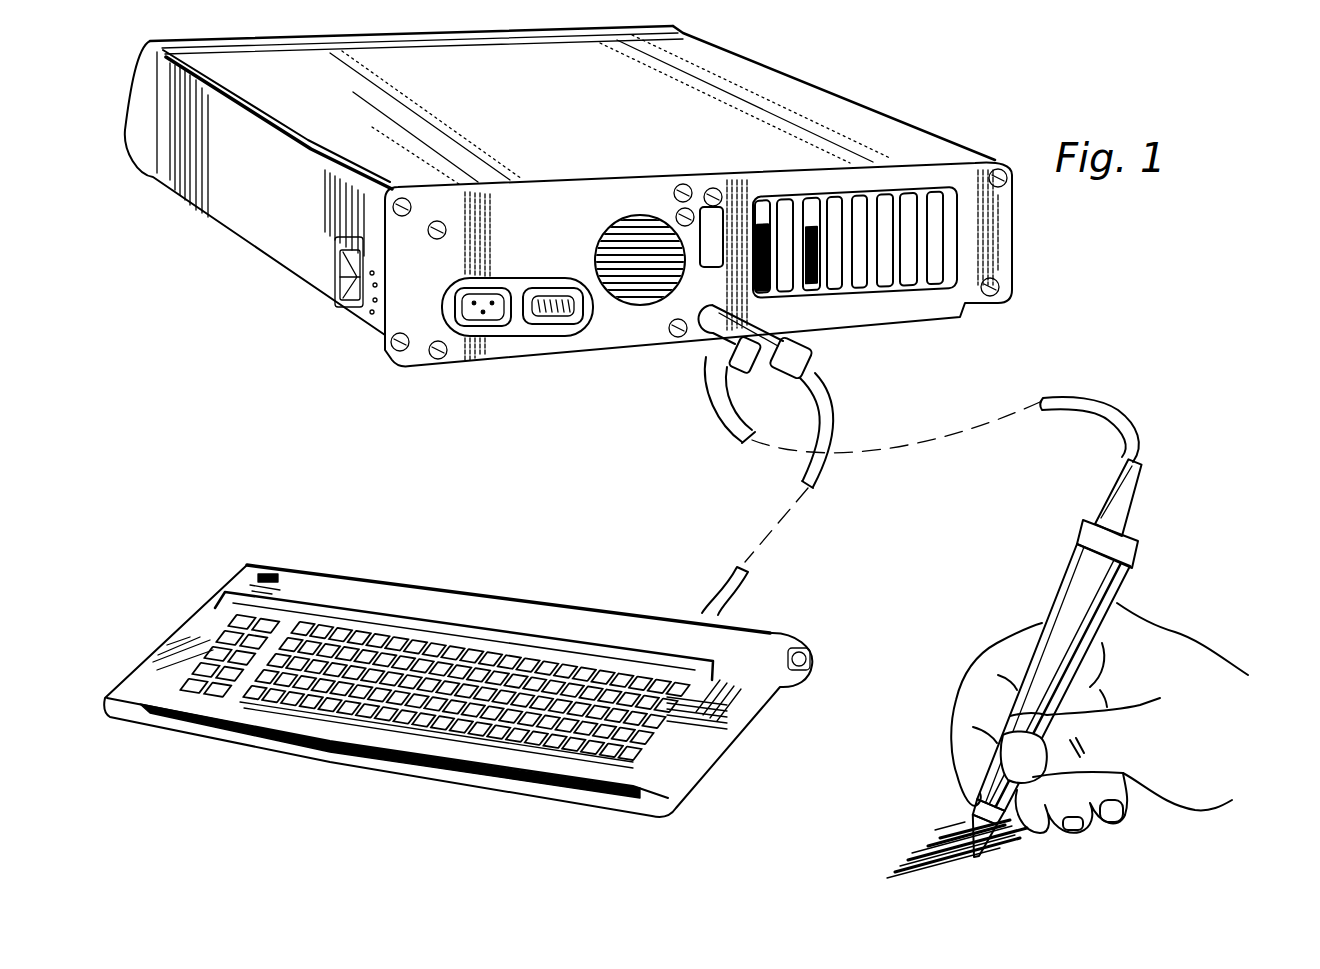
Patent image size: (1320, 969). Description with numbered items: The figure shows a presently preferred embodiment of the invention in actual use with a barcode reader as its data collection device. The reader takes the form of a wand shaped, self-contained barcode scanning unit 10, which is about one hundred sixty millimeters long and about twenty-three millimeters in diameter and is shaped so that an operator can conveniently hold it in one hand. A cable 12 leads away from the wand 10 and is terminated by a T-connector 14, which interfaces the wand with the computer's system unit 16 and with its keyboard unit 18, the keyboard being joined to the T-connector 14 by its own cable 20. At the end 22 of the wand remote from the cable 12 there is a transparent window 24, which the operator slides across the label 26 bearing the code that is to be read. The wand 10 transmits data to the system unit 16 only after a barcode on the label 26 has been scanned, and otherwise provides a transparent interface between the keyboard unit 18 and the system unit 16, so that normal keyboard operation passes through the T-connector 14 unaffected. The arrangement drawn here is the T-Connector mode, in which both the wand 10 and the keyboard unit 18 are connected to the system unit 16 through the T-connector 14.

The barcode scanning unit 10 is at (1142, 523).
The cable 12 is at (1108, 403).
The T-connector 14 is at (693, 369).
The system unit 16 is at (612, 138).
The keyboard unit 18 is at (487, 571).
The cable 20 is at (722, 305).
The end 22 is at (958, 834).
The transparent window 24 is at (968, 860).
The label 26 is at (917, 863).